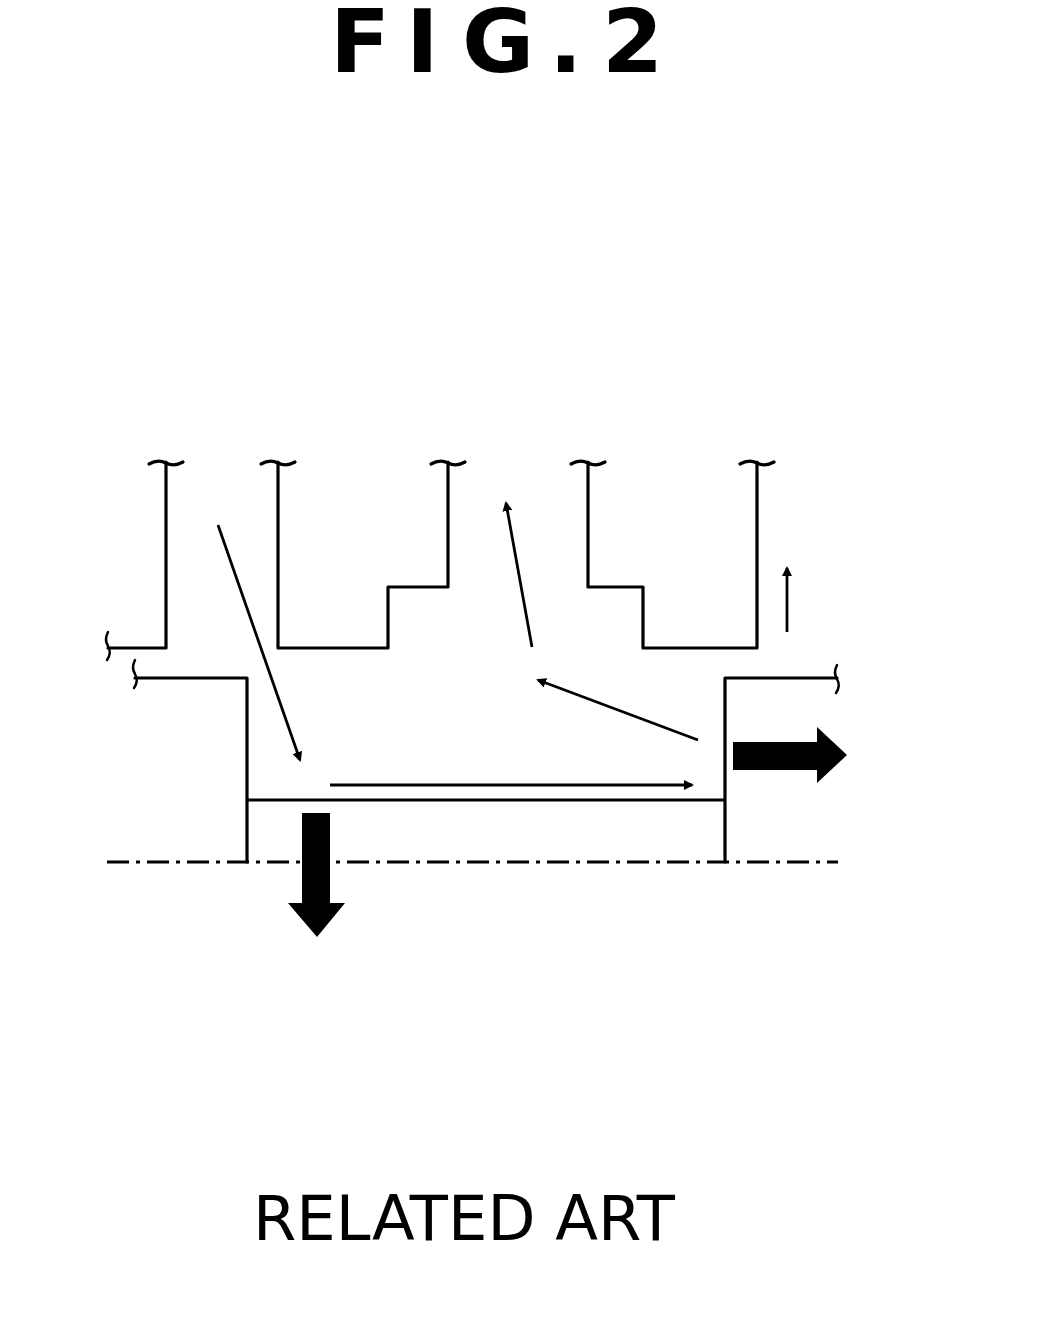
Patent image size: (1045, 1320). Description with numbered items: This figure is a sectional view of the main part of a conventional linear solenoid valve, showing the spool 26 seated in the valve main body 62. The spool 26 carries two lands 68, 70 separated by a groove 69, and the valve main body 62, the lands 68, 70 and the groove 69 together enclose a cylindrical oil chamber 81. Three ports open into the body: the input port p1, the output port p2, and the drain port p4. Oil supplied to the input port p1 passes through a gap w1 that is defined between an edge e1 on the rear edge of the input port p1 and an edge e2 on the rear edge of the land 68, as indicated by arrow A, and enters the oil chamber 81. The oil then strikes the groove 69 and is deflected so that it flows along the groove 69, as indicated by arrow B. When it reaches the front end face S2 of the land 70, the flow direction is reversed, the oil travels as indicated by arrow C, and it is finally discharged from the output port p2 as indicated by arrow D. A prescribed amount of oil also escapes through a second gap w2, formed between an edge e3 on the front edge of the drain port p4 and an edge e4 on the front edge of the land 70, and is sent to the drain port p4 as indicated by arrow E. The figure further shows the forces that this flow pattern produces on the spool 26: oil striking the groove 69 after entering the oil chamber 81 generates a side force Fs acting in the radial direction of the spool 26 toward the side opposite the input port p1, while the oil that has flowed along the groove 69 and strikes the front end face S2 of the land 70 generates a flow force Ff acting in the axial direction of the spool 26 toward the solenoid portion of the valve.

The valve main body 62 is at (368, 450).
The land 68 is at (160, 846).
The groove 69 is at (478, 835).
The land 70 is at (792, 815).
The spool 26 is at (578, 876).
The cylindrical oil chamber 81 is at (475, 738).
The input port p1 is at (225, 488).
The output port p2 is at (518, 485).
The drain port p4 is at (810, 495).
The edge e1 is at (280, 650).
The edge e2 is at (232, 668).
The edge e3 is at (763, 652).
The edge e4 is at (722, 673).
The gap w1 is at (258, 670).
The gap w2 is at (743, 672).
The front end face S2 is at (723, 760).
The arrow A is at (249, 642).
The arrow B is at (511, 764).
The arrow C is at (618, 700).
The arrow D is at (532, 575).
The arrow E is at (789, 576).
The side force Fs is at (316, 898).
The flow force Ff is at (814, 755).